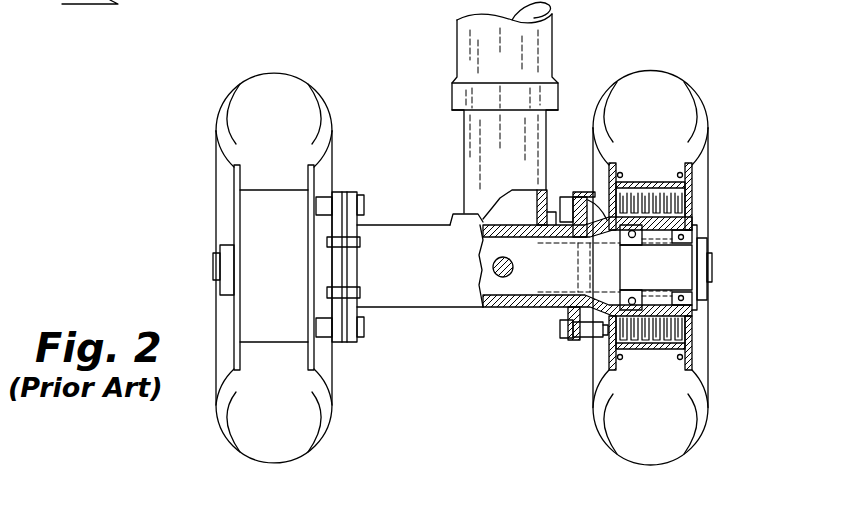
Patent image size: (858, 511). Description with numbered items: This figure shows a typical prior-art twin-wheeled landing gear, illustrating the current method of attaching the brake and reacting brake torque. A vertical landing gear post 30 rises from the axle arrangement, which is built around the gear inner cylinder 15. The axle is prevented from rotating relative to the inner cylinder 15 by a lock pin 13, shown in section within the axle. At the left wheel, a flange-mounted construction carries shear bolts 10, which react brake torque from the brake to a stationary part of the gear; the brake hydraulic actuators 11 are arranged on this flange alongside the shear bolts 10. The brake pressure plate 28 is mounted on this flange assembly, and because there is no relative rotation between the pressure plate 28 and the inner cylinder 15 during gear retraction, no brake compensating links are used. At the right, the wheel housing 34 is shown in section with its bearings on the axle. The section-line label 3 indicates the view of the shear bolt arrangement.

The section line 3 is at (90, 23).
The shear bolts 10 is at (361, 243).
The brake hydraulic actuators 11 is at (364, 337).
The lock pin 13 is at (495, 276).
The inner cylinder 15 is at (523, 308).
The brake pressure plate 28 is at (341, 343).
The landing gear post 30 is at (471, 58).
The wheel housing 34 is at (695, 224).